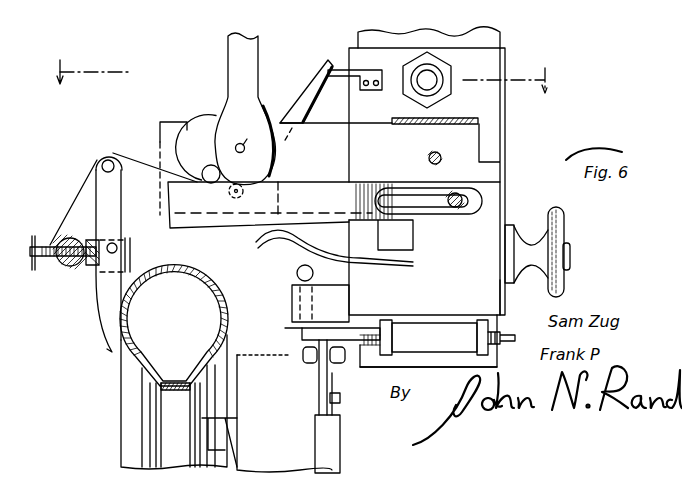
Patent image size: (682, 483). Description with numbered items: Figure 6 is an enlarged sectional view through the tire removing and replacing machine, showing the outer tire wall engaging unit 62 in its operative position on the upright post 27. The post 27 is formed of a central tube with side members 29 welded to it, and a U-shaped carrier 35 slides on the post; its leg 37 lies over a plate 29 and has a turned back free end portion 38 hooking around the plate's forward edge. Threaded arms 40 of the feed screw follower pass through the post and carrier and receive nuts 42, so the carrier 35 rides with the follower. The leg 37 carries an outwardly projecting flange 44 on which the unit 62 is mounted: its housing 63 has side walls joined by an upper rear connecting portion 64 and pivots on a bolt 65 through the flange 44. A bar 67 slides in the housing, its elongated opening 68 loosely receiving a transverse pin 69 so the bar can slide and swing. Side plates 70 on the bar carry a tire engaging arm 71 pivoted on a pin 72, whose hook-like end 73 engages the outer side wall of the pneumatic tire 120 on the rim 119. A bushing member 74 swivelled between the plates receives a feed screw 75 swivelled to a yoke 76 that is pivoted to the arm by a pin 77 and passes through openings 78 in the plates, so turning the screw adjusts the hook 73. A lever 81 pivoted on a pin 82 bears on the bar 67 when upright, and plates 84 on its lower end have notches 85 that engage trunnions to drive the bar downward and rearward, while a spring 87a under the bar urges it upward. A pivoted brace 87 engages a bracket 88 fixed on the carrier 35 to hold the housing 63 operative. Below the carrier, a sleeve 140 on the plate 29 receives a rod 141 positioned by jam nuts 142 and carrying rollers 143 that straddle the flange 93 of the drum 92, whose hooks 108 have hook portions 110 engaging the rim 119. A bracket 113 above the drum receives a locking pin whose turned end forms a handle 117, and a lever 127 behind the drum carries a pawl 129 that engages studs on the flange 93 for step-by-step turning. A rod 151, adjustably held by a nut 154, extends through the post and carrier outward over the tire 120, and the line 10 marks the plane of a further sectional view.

The section line 10 is at (304, 86).
The upright post 27 is at (430, 368).
The side members 29 is at (500, 35).
The carrier 35 is at (505, 54).
The leg of carrier 37 is at (505, 78).
The turned back free end portion 38 is at (258, 183).
The threaded arm 40 is at (405, 62).
The nut 42 is at (448, 74).
The flange portion 44 is at (500, 306).
The outer tire wall engaging unit 62 is at (172, 120).
The housing 63 is at (505, 160).
The upper rear connecting portion 64 is at (482, 104).
The bolt 65 is at (448, 142).
The bar 67 is at (310, 180).
The elongated opening 68 is at (436, 208).
The pin 69 is at (462, 206).
The side plates 70 is at (158, 238).
The tire engaging arm 71 is at (96, 192).
The pin 72 is at (112, 160).
The hook-like end 73 is at (94, 326).
The bushing member 74 is at (62, 264).
The feed screw 75 is at (50, 244).
The yoke 76 is at (92, 240).
The pivot pin 77 is at (126, 238).
The opening 78 is at (172, 274).
The lever 81 is at (229, 66).
The pin 82 is at (246, 136).
The plates 84 is at (214, 112).
The notch 85 is at (204, 168).
The brace 87 is at (312, 98).
The spring 87a is at (372, 270).
The bracket 88 is at (344, 70).
The drum 92 is at (240, 356).
The flange 93 is at (345, 365).
The hook 108 is at (232, 440).
The hook portion 110 is at (222, 418).
The supporting bracket 113 is at (330, 290).
The handle 117 is at (302, 265).
The rim 119 is at (160, 428).
The pneumatic tire 120 is at (230, 293).
The lever 127 is at (341, 448).
The pawl 129 is at (342, 400).
The sleeve 140 is at (428, 328).
The rod 141 is at (365, 328).
The jam nuts 142 is at (394, 326).
The rollers 143 is at (302, 356).
The rod 151 is at (570, 258).
The nut 154 is at (565, 228).